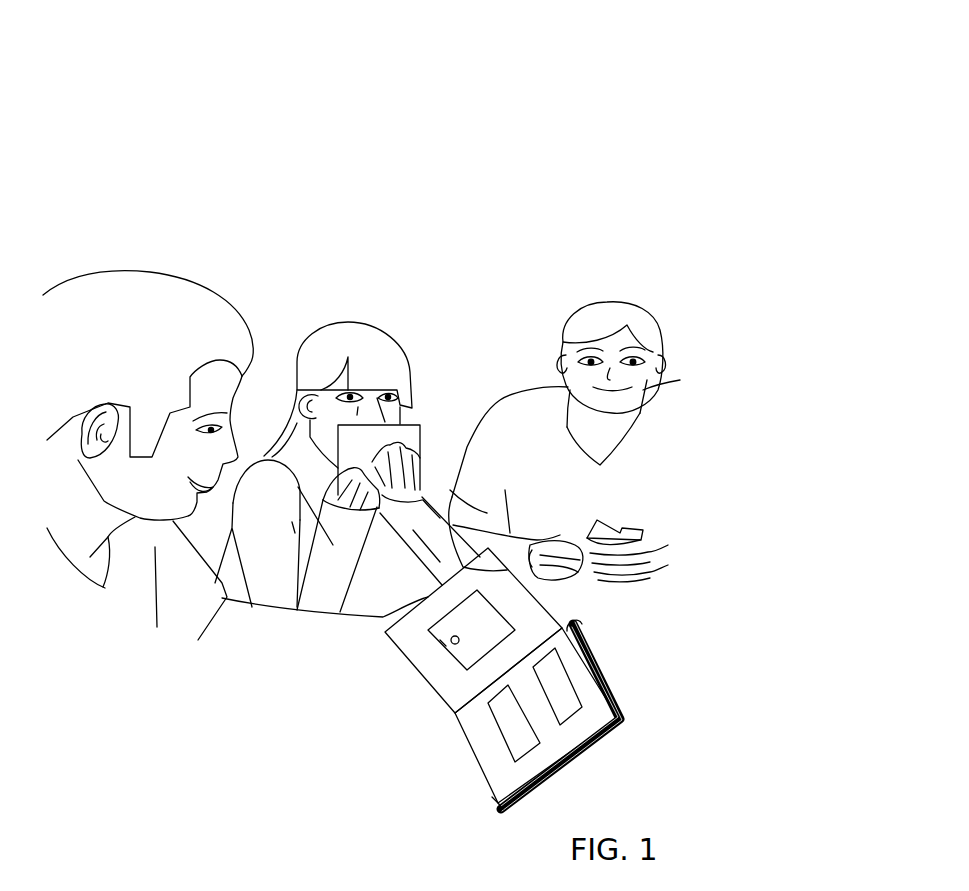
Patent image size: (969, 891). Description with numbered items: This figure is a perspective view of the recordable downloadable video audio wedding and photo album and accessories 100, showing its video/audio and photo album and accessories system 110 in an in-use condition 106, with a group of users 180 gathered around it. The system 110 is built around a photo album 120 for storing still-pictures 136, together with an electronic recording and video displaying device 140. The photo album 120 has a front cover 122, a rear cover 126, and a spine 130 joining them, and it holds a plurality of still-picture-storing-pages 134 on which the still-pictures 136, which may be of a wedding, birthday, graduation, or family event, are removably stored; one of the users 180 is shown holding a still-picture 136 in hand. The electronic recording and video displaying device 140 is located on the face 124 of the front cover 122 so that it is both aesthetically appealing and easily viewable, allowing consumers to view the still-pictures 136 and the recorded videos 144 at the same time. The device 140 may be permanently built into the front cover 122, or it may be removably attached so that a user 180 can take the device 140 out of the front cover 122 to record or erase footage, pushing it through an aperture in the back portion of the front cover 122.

The recordable downloadable video audio wedding and photo album and accessories 100 is at (535, 98).
The in-use condition 106 is at (537, 153).
The video/audio and photo album and accessories system 110 is at (547, 202).
The user 180 is at (570, 307).
The still-pictures 136 is at (613, 530).
The photo album 120 is at (473, 753).
The front cover 122 is at (383, 640).
The face 124 is at (479, 631).
The recorded videos 144 is at (443, 652).
The electronic recording and video displaying device 140 is at (457, 665).
The spine 130 is at (577, 621).
The rear cover 126 is at (605, 682).
The still-picture-storing-pages 134 is at (503, 808).